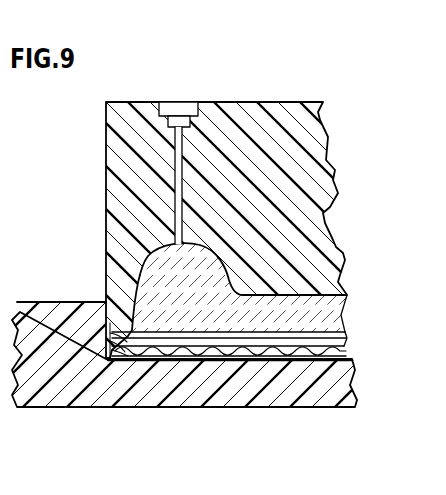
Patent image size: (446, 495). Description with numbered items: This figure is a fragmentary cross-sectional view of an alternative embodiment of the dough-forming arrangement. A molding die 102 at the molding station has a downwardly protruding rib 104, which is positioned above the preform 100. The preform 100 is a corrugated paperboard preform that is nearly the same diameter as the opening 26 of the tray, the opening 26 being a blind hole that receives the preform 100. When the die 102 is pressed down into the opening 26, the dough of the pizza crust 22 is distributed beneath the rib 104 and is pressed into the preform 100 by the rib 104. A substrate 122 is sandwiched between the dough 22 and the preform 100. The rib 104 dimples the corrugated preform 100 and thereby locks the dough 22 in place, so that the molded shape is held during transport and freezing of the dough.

The molding die 102 is at (335, 165).
The pizza crust (dough) 22 is at (345, 300).
The substrate 122 is at (345, 333).
The circular opening 26 is at (148, 358).
The rib 104 is at (123, 340).
The preform 100 is at (345, 357).